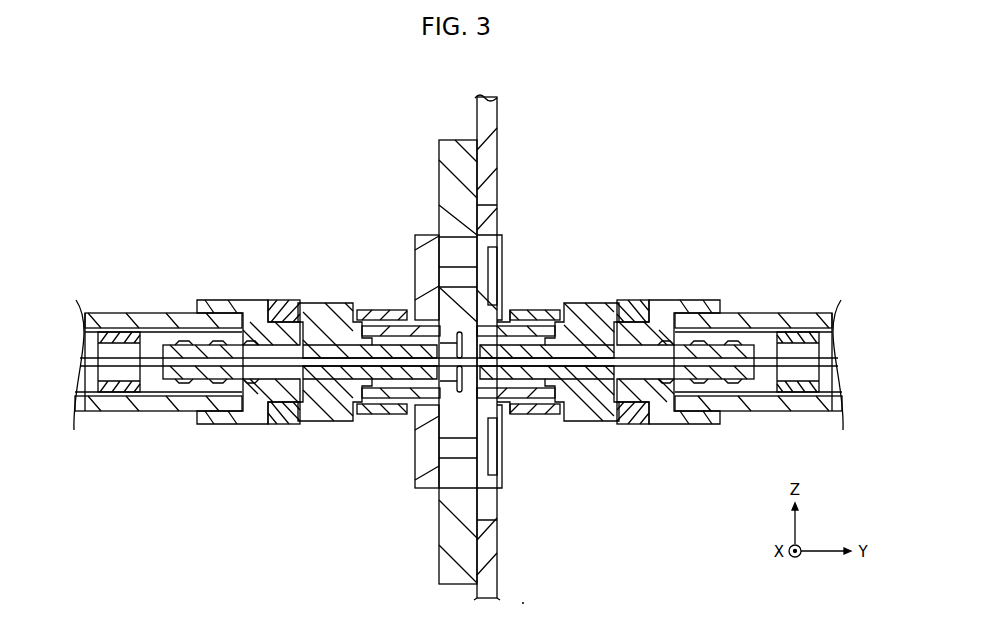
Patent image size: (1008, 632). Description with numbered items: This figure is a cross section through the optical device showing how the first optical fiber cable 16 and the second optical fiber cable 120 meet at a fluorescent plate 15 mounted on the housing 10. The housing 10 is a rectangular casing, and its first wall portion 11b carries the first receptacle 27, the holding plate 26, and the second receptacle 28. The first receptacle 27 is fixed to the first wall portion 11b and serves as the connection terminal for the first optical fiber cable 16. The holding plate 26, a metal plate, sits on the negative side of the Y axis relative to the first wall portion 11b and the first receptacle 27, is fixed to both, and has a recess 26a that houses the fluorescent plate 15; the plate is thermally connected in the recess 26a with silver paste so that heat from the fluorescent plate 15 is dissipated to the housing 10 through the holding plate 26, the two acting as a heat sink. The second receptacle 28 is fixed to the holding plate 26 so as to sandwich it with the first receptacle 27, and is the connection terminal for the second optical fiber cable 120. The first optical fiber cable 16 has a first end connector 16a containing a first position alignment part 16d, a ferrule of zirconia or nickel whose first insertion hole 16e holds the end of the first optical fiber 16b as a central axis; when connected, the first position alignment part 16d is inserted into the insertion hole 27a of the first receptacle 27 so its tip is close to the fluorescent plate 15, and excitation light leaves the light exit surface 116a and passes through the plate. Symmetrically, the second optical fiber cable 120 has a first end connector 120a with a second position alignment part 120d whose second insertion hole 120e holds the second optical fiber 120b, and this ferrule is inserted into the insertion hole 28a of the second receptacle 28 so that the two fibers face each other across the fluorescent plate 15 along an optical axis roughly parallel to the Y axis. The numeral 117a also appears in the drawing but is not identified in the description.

The housing 10 is at (523, 347).
The first wall portion 11b is at (483, 113).
The fluorescent plate 15 is at (456, 335).
The first optical fiber cable 16 is at (709, 300).
The first end connector 16a is at (636, 312).
The first optical fiber 16b is at (676, 405).
The first position alignment part 16d is at (596, 410).
The first insertion hole 16e is at (568, 405).
The holding plate 26 is at (458, 142).
The recess 26a is at (472, 445).
The first receptacle 27 is at (575, 304).
The insertion hole 27a is at (542, 312).
The second receptacle 28 is at (370, 310).
The insertion hole 28a is at (419, 412).
The light exit surface 116a is at (476, 405).
The upper through hole 117a is at (484, 332).
The second optical fiber cable 120 is at (232, 294).
The first end connector 120a is at (290, 301).
The second optical fiber 120b is at (216, 402).
The second position alignment part 120d is at (385, 404).
The second insertion hole 120e is at (328, 402).